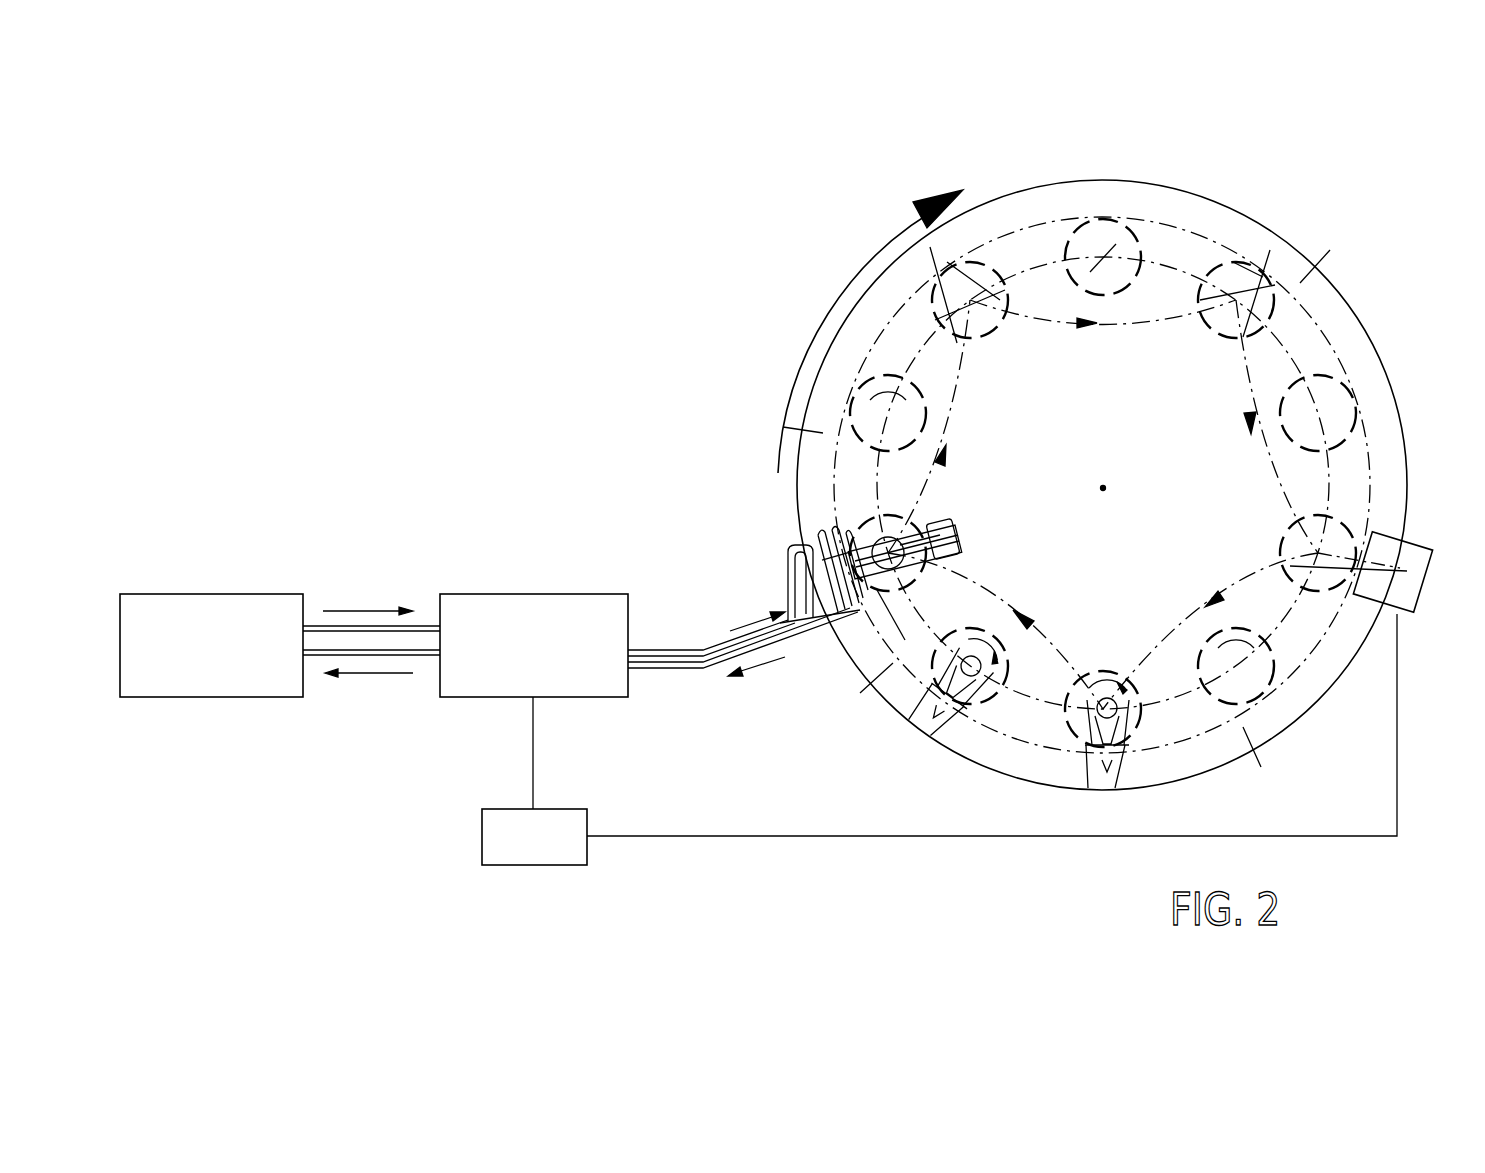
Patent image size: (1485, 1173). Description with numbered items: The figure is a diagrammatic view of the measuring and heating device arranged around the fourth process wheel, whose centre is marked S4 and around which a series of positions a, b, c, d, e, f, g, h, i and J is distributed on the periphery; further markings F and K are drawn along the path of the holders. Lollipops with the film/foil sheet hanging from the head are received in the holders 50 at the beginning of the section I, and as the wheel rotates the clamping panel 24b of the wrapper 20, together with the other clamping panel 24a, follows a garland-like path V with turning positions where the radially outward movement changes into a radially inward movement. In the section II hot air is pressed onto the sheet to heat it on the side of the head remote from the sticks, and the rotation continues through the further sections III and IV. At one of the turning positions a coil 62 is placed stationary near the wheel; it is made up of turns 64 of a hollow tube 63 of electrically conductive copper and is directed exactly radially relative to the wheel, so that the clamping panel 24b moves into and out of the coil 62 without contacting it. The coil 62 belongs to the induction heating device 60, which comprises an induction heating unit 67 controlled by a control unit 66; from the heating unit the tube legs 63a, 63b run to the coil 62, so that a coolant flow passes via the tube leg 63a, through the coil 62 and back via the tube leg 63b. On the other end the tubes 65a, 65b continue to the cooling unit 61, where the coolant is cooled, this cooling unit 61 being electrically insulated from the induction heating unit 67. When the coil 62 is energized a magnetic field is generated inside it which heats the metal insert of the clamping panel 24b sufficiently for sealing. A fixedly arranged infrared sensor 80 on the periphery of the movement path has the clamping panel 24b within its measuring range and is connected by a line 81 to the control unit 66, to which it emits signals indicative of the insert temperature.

The wrapper 20 is at (962, 547).
The clamping panel 24a is at (920, 513).
The clamping panel 24b is at (825, 545).
The holders 50 is at (1103, 775).
The induction heating device 60 is at (503, 420).
The cooling unit 61 is at (196, 618).
The coil 62 is at (847, 635).
The tube 63 is at (650, 692).
The tube leg 63a is at (687, 672).
The tube leg 63b is at (670, 650).
The turns 64 is at (787, 582).
The tube 65a is at (365, 627).
The tube 65b is at (362, 656).
The control unit 66 is at (548, 848).
The induction heating unit 67 is at (510, 610).
The infrared sensor 80 is at (1418, 562).
The line 81 is at (962, 837).
The turret axis S4 is at (1131, 489).
The station a is at (1335, 418).
The station b is at (1300, 525).
The station c is at (1245, 685).
The station d is at (1150, 712).
The station e is at (1005, 705).
The station f is at (888, 608).
The station g is at (870, 413).
The station h is at (972, 300).
The station i is at (1106, 265).
The station J is at (1238, 300).
The section I is at (979, 772).
The section II is at (779, 526).
The zone III is at (995, 174).
The zone IV is at (1421, 361).
The guide F is at (796, 307).
The gripper path K is at (1000, 640).
The garland-like path V is at (1010, 597).